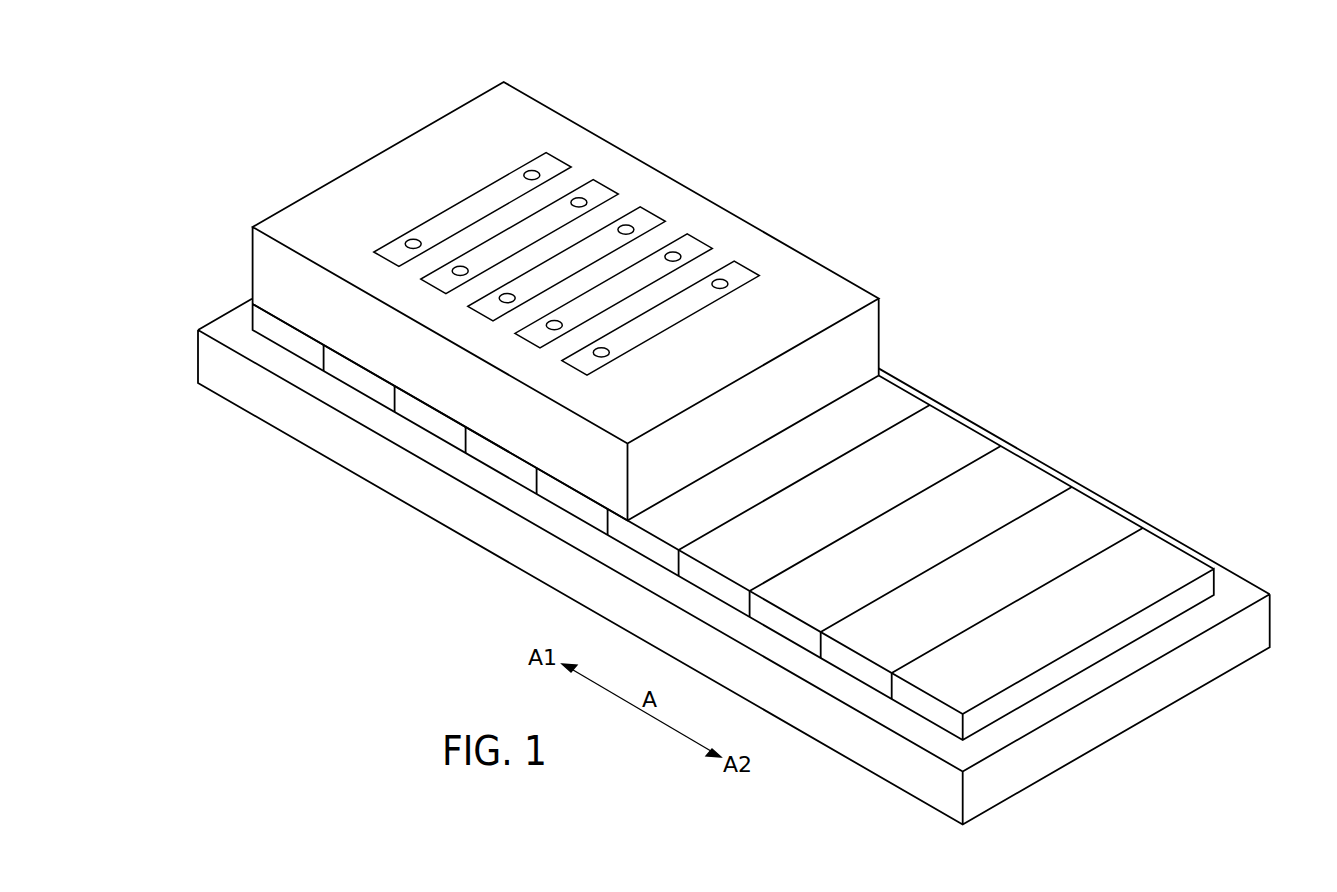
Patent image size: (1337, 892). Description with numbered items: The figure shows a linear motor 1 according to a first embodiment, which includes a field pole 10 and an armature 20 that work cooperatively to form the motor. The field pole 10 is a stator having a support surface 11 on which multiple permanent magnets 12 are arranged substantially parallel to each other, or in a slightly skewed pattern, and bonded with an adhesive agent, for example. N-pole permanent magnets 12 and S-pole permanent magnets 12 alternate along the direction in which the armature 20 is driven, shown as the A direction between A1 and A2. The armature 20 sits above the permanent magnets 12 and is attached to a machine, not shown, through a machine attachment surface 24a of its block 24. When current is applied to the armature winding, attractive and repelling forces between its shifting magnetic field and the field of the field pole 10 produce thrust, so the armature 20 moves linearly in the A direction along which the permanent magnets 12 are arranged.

The linear motor 1 is at (744, 429).
The field pole 10 is at (744, 562).
The support surface 11 is at (1242, 593).
The permanent magnets 12 is at (898, 407).
The armature 20 is at (566, 301).
The block 24 is at (611, 259).
The machine attachment surface 24a is at (690, 243).